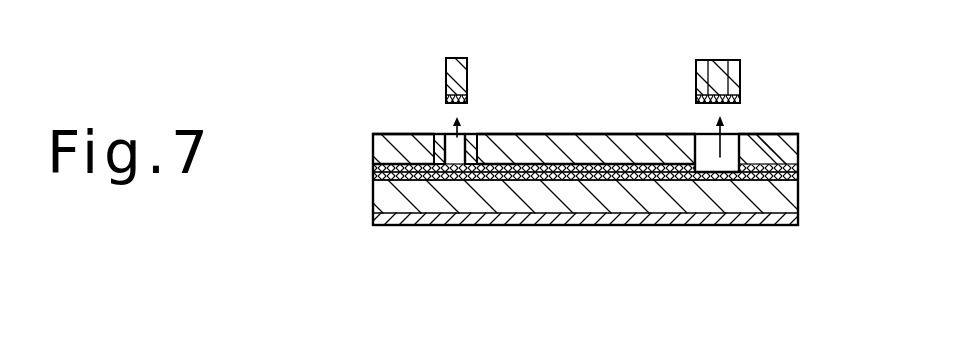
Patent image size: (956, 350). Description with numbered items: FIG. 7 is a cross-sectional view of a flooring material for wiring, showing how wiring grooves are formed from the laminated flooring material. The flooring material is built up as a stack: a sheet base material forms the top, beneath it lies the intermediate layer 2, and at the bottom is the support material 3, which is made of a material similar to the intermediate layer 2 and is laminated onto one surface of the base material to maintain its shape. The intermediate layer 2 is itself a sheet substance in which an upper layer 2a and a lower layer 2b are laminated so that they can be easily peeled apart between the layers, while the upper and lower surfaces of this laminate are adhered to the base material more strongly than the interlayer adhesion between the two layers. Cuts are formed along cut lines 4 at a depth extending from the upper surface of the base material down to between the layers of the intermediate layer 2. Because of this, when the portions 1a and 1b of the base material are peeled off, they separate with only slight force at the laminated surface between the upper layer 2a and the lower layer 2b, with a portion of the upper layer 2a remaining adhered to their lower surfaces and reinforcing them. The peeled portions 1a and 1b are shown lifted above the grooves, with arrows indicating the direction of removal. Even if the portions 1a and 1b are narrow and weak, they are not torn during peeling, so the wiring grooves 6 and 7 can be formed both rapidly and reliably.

The portion of base material 1a is at (462, 64).
The portion of base material 1b is at (718, 67).
The intermediate layer 2 is at (366, 160).
The upper layer 2a is at (468, 105).
The lower layer 2b is at (799, 192).
The support material 3 is at (782, 226).
The cut line 4 is at (478, 150).
The wiring groove 6 is at (445, 134).
The wiring groove 7 is at (708, 156).